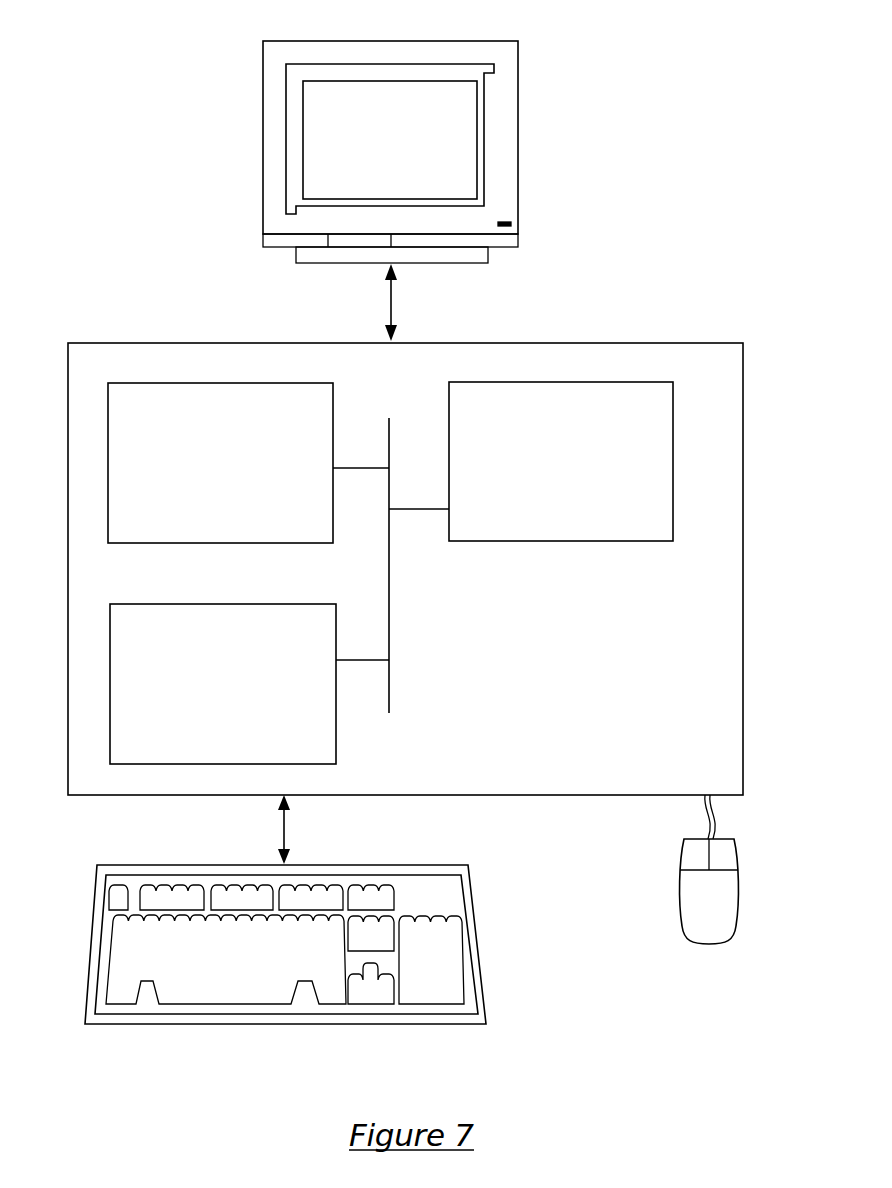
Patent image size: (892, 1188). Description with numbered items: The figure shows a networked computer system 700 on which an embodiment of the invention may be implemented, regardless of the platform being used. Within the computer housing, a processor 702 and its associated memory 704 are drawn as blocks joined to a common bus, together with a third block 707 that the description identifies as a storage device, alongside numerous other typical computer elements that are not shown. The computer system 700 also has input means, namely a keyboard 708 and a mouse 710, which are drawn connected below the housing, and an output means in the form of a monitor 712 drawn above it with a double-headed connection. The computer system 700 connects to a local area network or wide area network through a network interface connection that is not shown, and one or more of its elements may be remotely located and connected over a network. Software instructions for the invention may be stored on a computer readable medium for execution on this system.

The networked computer system 700 is at (716, 219).
The processor 702 is at (586, 461).
The memory 704 is at (243, 474).
The storage device 707 is at (240, 691).
The keyboard 708 is at (238, 980).
The mouse 710 is at (729, 912).
The monitor 712 is at (409, 154).